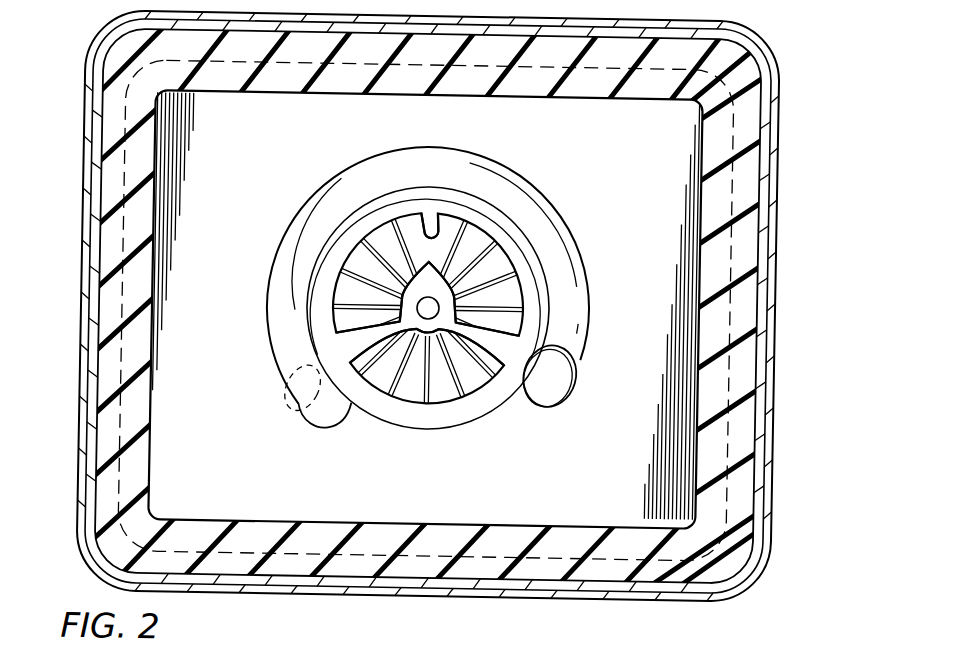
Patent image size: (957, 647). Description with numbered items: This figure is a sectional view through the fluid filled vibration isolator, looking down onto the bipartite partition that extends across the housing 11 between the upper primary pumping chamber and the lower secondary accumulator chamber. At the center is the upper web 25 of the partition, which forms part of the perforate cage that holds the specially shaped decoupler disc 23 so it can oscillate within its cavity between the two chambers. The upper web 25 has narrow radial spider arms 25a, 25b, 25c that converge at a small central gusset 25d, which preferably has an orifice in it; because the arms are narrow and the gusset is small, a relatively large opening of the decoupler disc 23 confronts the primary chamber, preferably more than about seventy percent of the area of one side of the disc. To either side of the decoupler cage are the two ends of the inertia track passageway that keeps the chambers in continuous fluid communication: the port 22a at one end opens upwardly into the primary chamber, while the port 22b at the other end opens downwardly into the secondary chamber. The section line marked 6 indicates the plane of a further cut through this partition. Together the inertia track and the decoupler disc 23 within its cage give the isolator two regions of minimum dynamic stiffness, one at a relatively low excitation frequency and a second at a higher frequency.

The housing 11 is at (772, 194).
The upper web 25 is at (478, 164).
The decoupler disc 23 is at (486, 246).
The upper spider arm 25a is at (353, 345).
The upper spider arm 25b is at (430, 222).
The upper spider arm 25c is at (493, 348).
The central gusset 25d is at (427, 324).
The port 22a is at (548, 380).
The port 22b is at (294, 404).
The section line 6- 6 is at (428, 320).